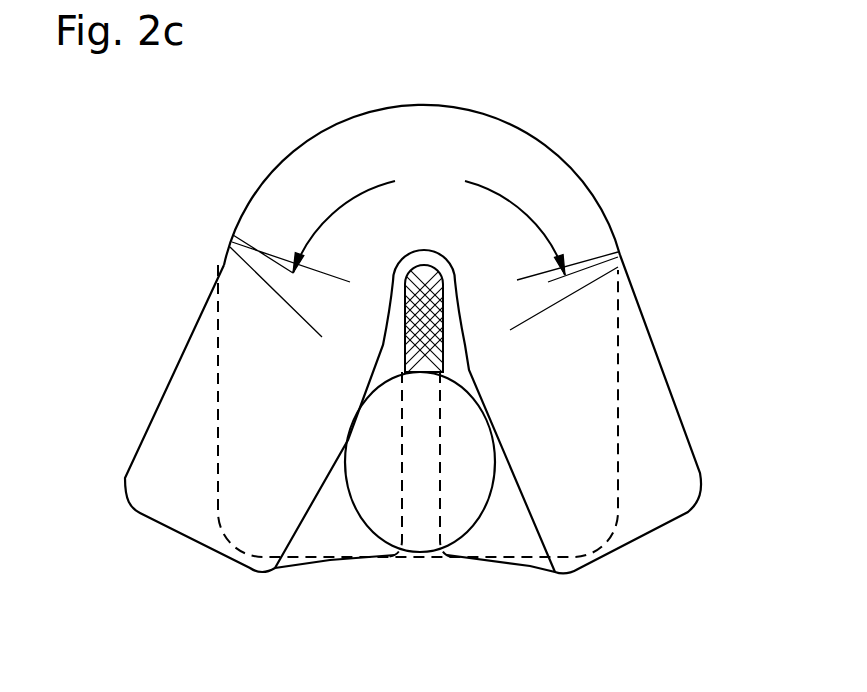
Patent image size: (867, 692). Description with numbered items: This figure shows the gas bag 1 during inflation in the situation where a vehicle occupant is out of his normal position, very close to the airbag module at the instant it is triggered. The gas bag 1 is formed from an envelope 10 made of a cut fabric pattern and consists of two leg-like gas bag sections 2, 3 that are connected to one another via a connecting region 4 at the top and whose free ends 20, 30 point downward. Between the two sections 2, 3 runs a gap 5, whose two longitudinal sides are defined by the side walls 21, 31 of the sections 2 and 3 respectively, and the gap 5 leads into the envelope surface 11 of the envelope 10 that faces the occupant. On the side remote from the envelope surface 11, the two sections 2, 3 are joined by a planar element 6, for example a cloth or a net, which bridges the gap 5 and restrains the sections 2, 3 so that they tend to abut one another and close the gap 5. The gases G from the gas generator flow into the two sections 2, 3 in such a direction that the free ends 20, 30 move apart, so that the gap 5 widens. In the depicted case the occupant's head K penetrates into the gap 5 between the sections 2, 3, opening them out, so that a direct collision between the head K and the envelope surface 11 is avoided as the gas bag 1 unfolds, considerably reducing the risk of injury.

The gas bag 1 is at (415, 67).
The envelope 10 is at (302, 138).
The connecting region 4 is at (447, 143).
The gas bag section 2 is at (183, 385).
The gas bag section 3 is at (652, 422).
The free end 20 is at (193, 512).
The free end 30 is at (642, 507).
The side wall 21 is at (348, 440).
The side wall 31 is at (468, 368).
The envelope surface 11 is at (280, 333).
The gap 5 is at (438, 319).
The planar element 6 is at (408, 350).
The gases G is at (538, 227).
The head K is at (393, 503).